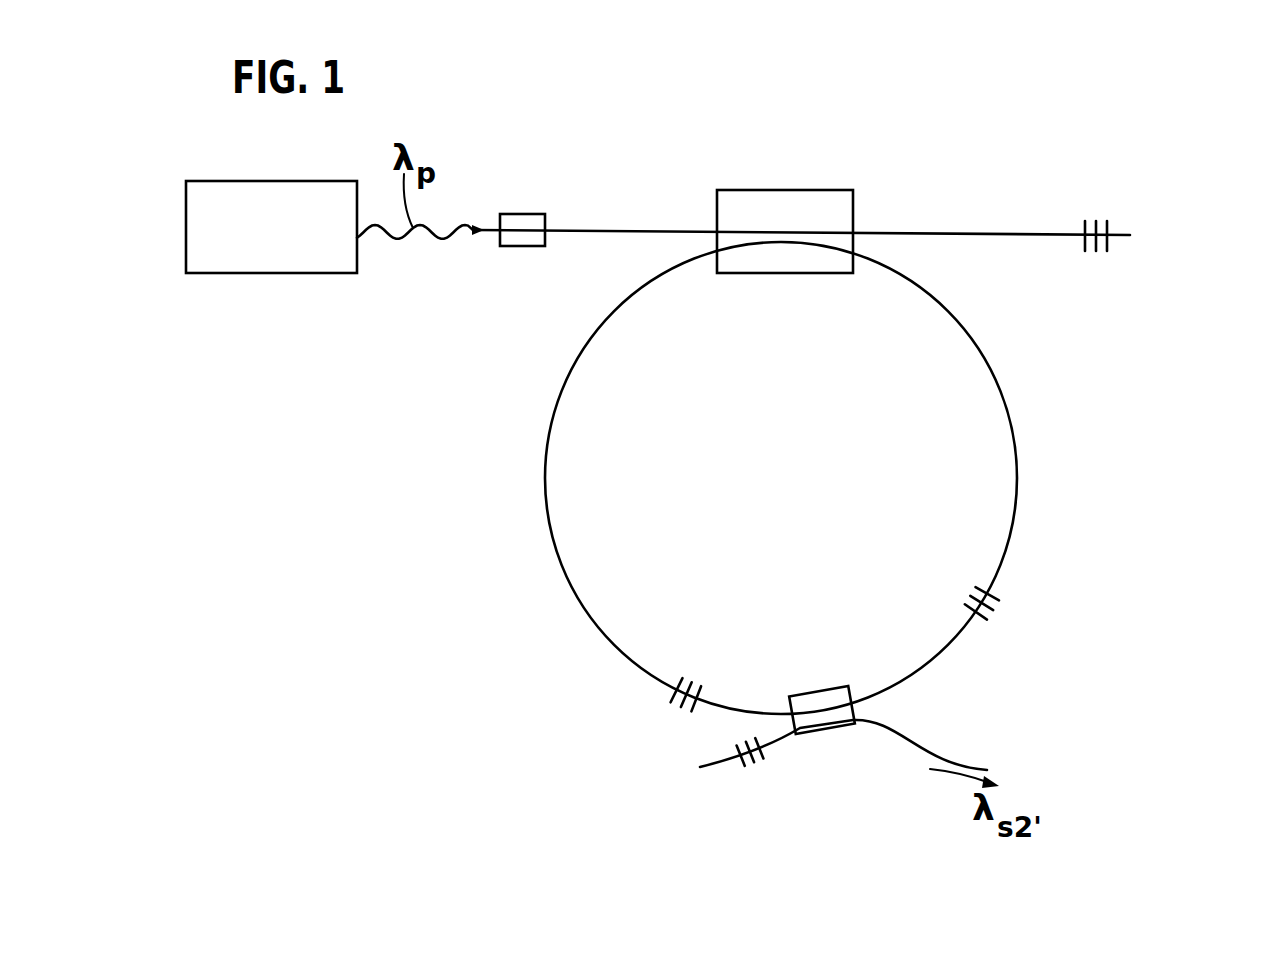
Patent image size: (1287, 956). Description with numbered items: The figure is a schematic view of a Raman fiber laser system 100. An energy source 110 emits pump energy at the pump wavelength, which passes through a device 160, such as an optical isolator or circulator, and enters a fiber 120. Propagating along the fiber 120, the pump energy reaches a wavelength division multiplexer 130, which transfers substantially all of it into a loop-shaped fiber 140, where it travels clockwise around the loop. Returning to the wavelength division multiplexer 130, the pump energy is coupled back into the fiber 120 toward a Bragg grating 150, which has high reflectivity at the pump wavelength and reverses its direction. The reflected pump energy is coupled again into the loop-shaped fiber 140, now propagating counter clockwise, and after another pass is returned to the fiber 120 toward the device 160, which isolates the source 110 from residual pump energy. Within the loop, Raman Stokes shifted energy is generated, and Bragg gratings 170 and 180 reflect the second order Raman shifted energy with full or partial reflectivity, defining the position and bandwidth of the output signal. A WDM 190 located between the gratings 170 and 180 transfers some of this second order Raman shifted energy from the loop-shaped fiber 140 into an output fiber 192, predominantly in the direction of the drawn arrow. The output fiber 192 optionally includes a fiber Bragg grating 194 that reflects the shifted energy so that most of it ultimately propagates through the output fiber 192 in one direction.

The Raman fiber laser system 100 is at (1150, 160).
The energy source 110 is at (294, 244).
The fiber 120 is at (583, 228).
The wavelength division multiplexer 130 is at (833, 200).
The loop-shaped fiber 140 is at (562, 385).
The Bragg grating 150 is at (1104, 256).
The device 160 is at (523, 222).
The Bragg grating 170 is at (670, 699).
The Bragg grating 180 is at (993, 597).
The WDM 190 is at (855, 709).
The output fiber 192 is at (722, 767).
The fiber Bragg grating 194 is at (762, 755).